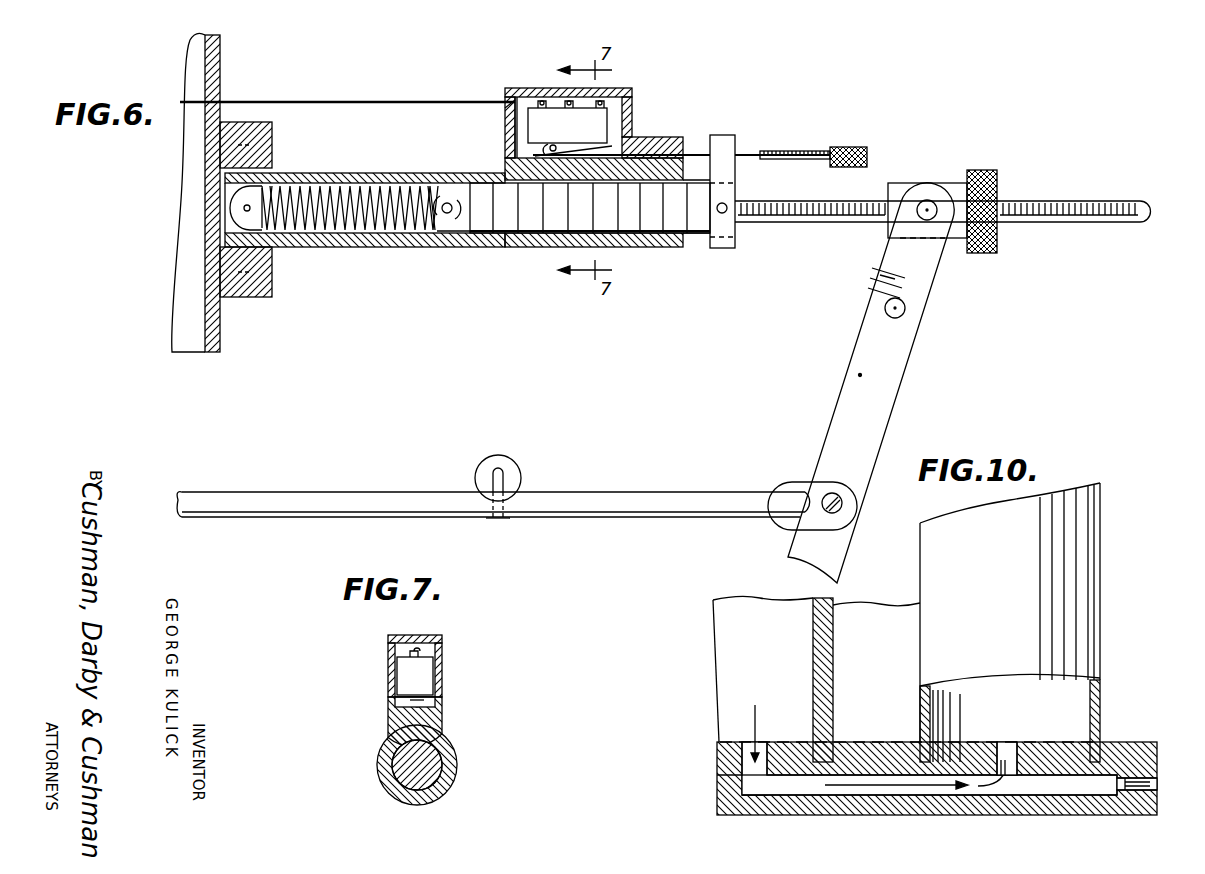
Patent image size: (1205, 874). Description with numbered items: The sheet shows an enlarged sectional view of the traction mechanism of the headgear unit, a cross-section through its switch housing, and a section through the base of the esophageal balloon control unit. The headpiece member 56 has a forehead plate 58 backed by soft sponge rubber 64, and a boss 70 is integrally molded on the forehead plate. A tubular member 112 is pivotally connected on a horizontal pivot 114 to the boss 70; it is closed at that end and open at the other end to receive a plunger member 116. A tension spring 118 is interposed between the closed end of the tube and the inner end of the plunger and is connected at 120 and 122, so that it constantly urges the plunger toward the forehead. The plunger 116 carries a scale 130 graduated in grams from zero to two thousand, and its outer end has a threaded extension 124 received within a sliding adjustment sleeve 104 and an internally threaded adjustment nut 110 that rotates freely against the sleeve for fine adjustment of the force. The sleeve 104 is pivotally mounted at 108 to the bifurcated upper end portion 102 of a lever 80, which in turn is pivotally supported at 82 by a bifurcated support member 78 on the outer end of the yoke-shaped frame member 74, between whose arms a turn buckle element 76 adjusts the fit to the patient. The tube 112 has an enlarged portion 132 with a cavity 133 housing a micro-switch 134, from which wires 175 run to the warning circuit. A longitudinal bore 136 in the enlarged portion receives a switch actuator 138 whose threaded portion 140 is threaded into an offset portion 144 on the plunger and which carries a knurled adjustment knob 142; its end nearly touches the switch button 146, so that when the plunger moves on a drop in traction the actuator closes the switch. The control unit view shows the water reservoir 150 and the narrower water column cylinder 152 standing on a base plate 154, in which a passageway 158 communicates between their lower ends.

In FIG. 6, the headpiece member 56 is at (220, 93).
In FIG. 6, the forehead plate 58 is at (222, 325).
In FIG. 6, the soft sponge rubber 64 is at (174, 348).
In FIG. 6, the boss 70 is at (272, 140).
In FIG. 6, the yoke-shaped frame member 74 is at (538, 490).
In FIG. 6, the turn buckle element 76 is at (482, 470).
In FIG. 6, the bifurcated support member 78 is at (800, 482).
In FIG. 6, the lever 80 is at (906, 356).
In FIG. 6, the pivot 82 is at (843, 510).
In FIG. 6, the bifurcated upper end portion 102 is at (938, 255).
In FIG. 6, the adjustment sleeve 104 is at (942, 182).
In FIG. 6, the pivot 108 is at (920, 204).
In FIG. 6, the adjustment nut 110 is at (995, 172).
In FIG. 6, the tubular member 112 is at (455, 247).
In FIG. 6, the horizontal pivot 114 is at (262, 206).
In FIG. 6, the plunger member 116 is at (716, 248).
In FIG. 7, the plunger member 116 is at (456, 752).
In FIG. 6, the tension spring 118 is at (380, 186).
In FIG. 6, the spring connection 120 is at (240, 210).
In FIG. 6, the spring connection 122 is at (446, 200).
In FIG. 6, the threaded extension 124 is at (1076, 200).
In FIG. 6, the scale 130 is at (700, 240).
In FIG. 6, the enlarged portion 132 is at (647, 136).
In FIG. 7, the enlarged portion 132 is at (443, 688).
In FIG. 6, the cavity 133 is at (626, 107).
In FIG. 7, the cavity 133 is at (388, 640).
In FIG. 6, the micro-switch 134 is at (522, 122).
In FIG. 7, the micro-switch 134 is at (437, 672).
In FIG. 6, the longitudinal bore 136 is at (688, 152).
In FIG. 7, the longitudinal bore 136 is at (435, 705).
In FIG. 6, the switch actuator 138 is at (735, 155).
In FIG. 6, the threaded portion 140 is at (798, 152).
In FIG. 6, the knurled adjustment knob 142 is at (848, 147).
In FIG. 6, the offset portion 144 is at (738, 150).
In FIG. 6, the switch contact or button 146 is at (553, 125).
In FIG. 7, the switch contact or button 146 is at (408, 699).
In FIG. 10, the water reservoir 150 is at (833, 640).
In FIG. 10, the water column cylinder 152 is at (1100, 588).
In FIG. 10, the base plate 154 is at (724, 786).
In FIG. 10, the passageway 158 is at (870, 775).
In FIG. 6, the wires 175 is at (515, 100).